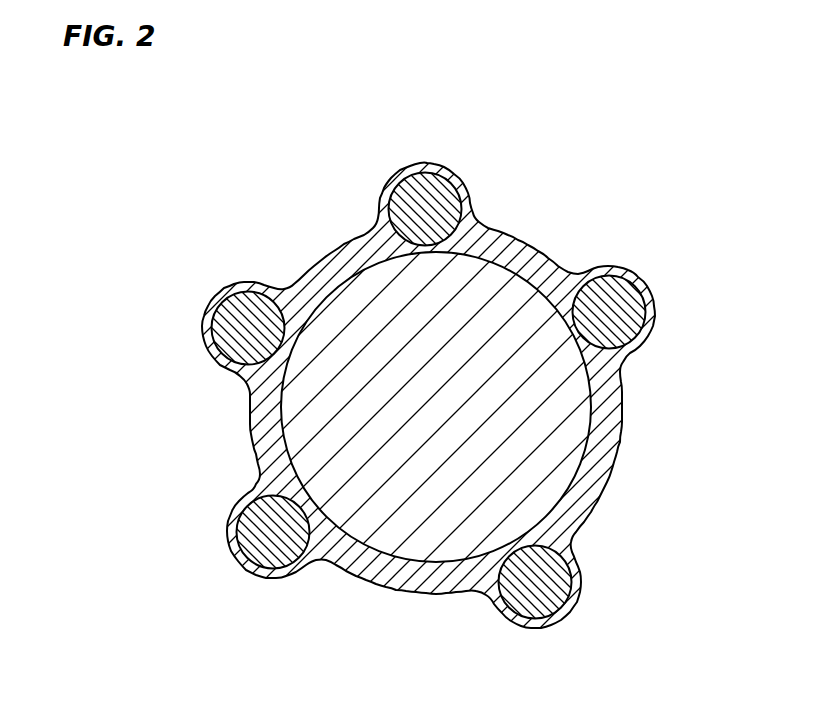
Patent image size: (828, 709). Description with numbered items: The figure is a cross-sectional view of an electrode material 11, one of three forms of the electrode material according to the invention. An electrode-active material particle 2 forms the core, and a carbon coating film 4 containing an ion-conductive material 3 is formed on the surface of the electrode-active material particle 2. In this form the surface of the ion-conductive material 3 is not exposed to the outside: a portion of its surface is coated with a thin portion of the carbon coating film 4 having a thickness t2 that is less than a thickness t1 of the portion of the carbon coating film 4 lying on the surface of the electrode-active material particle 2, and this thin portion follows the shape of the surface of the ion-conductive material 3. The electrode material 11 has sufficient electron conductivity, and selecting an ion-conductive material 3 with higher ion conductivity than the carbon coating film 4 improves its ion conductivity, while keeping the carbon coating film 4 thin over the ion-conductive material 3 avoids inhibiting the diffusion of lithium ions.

The electrode material 11 is at (340, 181).
The electrode-active material particle 2 is at (395, 342).
The ion-conductive material 3 is at (628, 299).
The carbon coating film 4 is at (538, 275).
The thickness of the carbon coating film on the electrode-active material particle t1 is at (320, 410).
The thickness of the carbon coating film on the ion-conductive material t2 is at (252, 330).